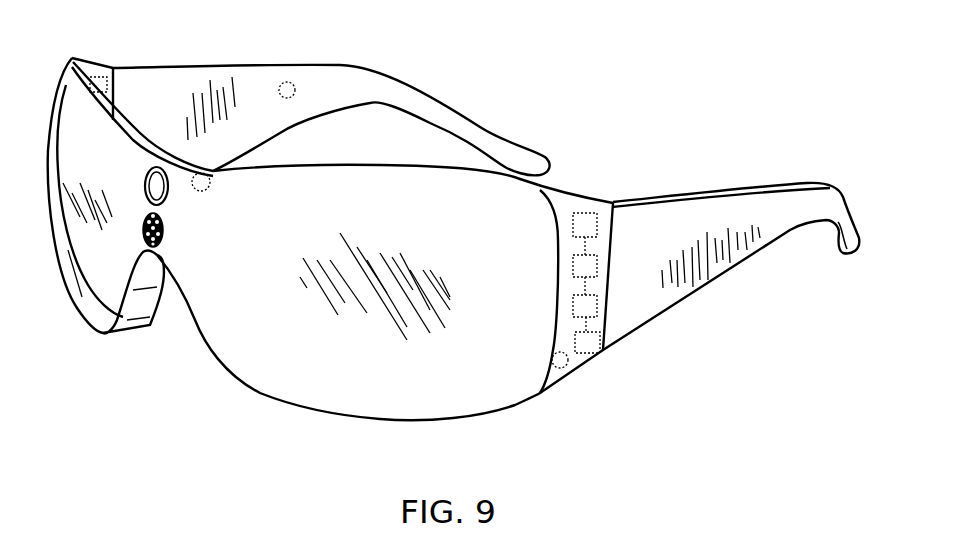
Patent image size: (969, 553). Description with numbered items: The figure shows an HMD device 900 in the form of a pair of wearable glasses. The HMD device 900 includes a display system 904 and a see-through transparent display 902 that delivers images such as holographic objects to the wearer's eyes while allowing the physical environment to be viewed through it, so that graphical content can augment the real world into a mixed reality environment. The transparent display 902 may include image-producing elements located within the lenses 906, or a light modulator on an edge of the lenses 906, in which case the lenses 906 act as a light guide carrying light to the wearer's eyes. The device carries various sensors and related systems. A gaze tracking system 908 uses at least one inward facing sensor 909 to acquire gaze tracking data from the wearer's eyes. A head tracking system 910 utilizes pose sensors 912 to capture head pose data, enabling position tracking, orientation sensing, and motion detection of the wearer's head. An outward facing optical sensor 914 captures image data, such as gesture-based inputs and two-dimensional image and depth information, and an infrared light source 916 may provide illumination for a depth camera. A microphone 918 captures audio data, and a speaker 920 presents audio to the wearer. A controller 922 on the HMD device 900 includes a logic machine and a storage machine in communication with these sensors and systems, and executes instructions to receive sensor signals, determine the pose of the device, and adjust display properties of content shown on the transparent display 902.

The HMD device 900 is at (493, 55).
The transparent display 902 is at (250, 357).
The display system 904 is at (587, 212).
The lenses 906 is at (137, 303).
The gaze tracking system 908 is at (597, 267).
The inward facing sensor 909 is at (201, 173).
The head tracking system 910 is at (597, 307).
The pose sensors 912 is at (597, 337).
The optical sensor 914 is at (163, 232).
The infrared light source 916 is at (168, 188).
The microphone 918 is at (560, 370).
The speaker 920 is at (287, 81).
The controller 922 is at (100, 65).